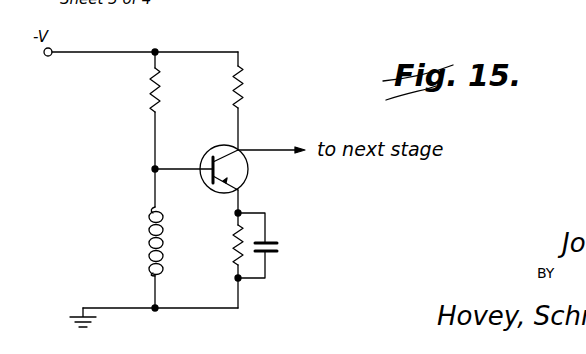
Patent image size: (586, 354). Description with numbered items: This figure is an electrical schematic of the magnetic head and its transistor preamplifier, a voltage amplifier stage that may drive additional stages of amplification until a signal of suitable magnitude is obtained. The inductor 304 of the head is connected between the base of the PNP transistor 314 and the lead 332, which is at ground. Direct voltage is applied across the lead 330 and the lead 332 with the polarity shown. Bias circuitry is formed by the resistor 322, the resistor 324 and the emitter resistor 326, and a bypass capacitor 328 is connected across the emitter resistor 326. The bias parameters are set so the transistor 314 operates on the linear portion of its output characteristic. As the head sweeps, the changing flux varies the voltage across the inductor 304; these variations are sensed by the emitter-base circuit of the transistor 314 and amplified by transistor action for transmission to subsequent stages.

The lead 330 is at (113, 52).
The bias circuitry resistor 322 is at (160, 84).
The bias circuitry resistor 324 is at (243, 80).
The PNP transistor 314 is at (246, 178).
The emitter resistor 326 is at (242, 258).
The bypass capacitor 328 is at (271, 242).
The inductor 304 is at (163, 240).
The lead 332 is at (127, 309).